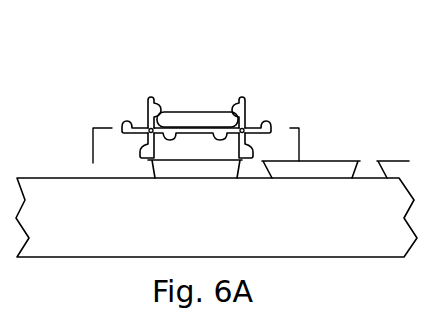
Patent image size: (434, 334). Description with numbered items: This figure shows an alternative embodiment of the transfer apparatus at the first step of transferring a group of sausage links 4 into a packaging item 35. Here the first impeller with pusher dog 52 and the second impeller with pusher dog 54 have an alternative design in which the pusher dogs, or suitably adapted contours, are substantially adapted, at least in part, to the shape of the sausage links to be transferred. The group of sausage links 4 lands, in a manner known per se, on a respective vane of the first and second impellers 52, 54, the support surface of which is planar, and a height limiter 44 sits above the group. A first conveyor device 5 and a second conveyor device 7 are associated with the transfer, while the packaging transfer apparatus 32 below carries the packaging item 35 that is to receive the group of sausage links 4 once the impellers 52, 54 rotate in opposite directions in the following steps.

The group of sausage links 4 is at (175, 118).
The height limiter 44 is at (201, 70).
The first conveyor device 5 is at (198, 94).
The first impeller with pusher dog 52 is at (152, 100).
The second impeller with pusher dog 54 is at (243, 107).
The second conveyor device 7 is at (96, 94).
The packaging transfer apparatus 32 is at (52, 160).
The packaging item 35 is at (327, 178).